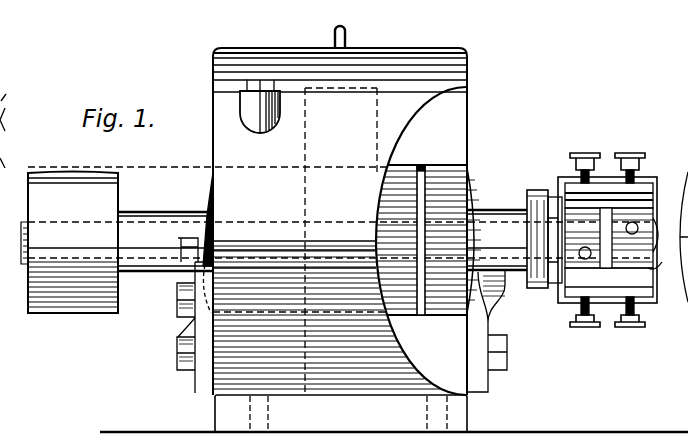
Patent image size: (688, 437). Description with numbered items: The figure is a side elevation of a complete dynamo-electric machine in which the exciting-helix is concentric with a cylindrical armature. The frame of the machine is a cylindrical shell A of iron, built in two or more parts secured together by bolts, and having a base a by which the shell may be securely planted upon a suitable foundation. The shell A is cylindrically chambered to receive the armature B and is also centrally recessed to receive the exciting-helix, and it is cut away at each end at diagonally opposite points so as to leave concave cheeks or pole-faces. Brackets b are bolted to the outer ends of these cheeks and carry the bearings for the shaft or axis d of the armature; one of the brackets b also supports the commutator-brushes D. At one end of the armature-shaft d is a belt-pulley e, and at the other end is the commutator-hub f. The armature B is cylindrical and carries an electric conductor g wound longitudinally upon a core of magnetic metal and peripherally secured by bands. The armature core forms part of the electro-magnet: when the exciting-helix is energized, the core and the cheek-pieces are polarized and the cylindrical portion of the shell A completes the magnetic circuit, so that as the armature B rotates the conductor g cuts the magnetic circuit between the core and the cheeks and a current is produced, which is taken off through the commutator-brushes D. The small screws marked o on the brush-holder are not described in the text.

The cylindrical shell A is at (339, 210).
The armature B is at (421, 241).
The commutator-brushes D is at (535, 178).
The base a is at (341, 413).
The brackets b is at (277, 230).
The shaft or axis d is at (16, 243).
The belt-pulley e is at (73, 243).
The commutator-hub f is at (659, 264).
The electric conductor g is at (429, 240).
The screw o is at (590, 249).